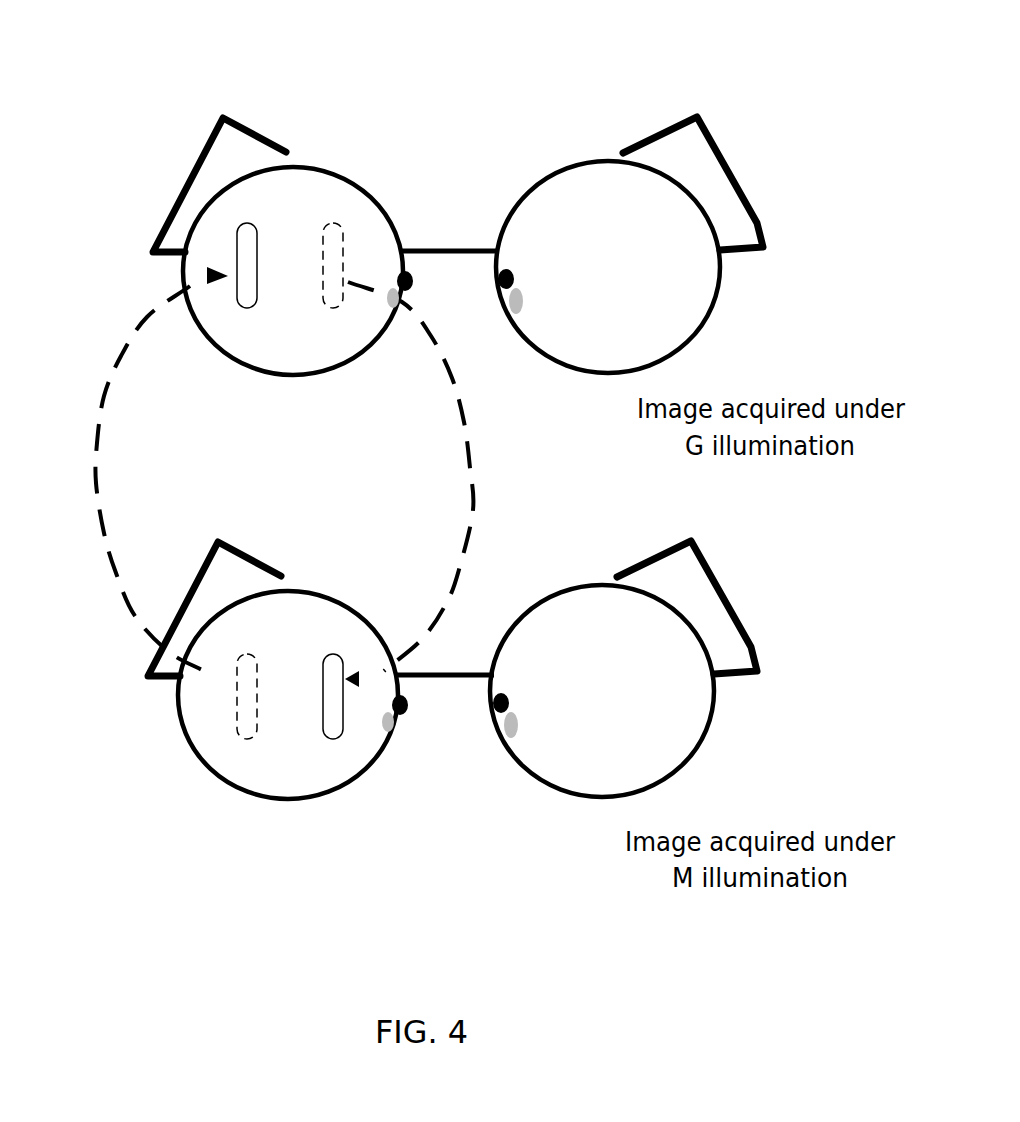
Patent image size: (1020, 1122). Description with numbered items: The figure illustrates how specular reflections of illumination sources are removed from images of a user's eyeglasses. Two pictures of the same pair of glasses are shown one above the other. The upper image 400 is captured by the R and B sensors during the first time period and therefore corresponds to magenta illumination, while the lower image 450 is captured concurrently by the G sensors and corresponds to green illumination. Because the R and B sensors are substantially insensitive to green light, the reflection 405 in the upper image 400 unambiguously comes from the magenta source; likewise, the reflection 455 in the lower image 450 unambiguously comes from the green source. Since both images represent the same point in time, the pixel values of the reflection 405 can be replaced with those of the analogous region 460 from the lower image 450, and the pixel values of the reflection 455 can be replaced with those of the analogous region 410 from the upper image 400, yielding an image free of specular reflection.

The upper image 400 is at (175, 92).
The reflection 405 is at (257, 253).
The analogous region 410 is at (345, 253).
The lower image 450 is at (93, 656).
The reflection 455 is at (345, 672).
The analogous region 460 is at (257, 680).